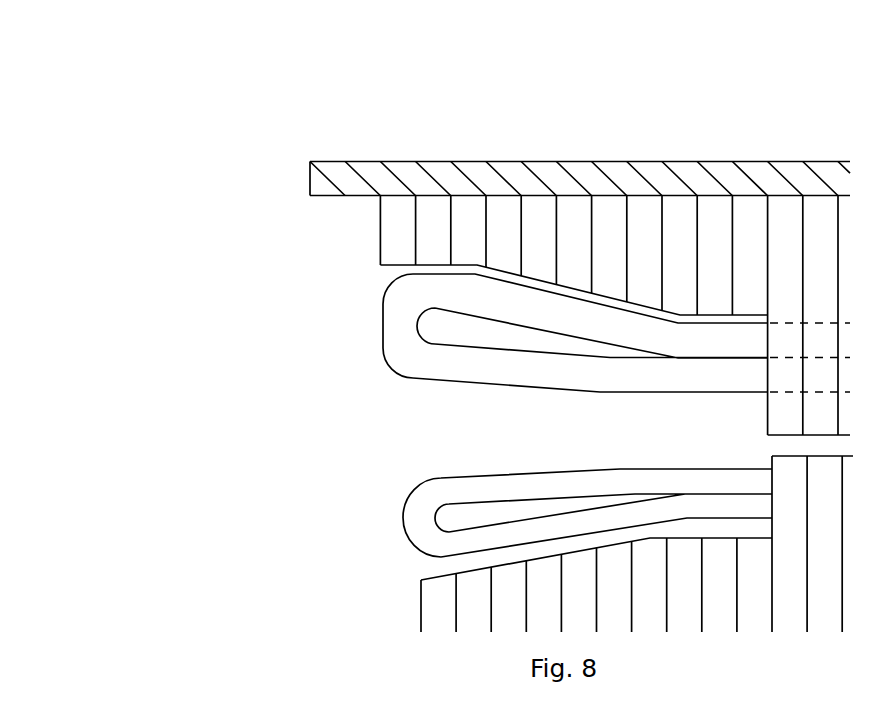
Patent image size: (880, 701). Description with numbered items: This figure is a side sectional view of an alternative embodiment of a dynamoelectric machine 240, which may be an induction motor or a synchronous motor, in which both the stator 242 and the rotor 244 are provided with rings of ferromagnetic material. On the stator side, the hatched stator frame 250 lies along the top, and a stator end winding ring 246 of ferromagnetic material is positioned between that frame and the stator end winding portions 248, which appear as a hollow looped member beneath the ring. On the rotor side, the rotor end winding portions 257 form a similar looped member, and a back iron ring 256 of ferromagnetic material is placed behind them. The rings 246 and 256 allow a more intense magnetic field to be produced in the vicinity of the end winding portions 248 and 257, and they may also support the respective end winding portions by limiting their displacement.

The dynamoelectric machine 240 is at (103, 57).
The stator 242 is at (116, 207).
The rotor 244 is at (139, 479).
The end winding ring 246 is at (503, 238).
The end winding portions 248 is at (400, 327).
The stator frame 250 is at (345, 178).
The back iron ring 256 is at (510, 608).
The end winding portions 257 is at (472, 497).